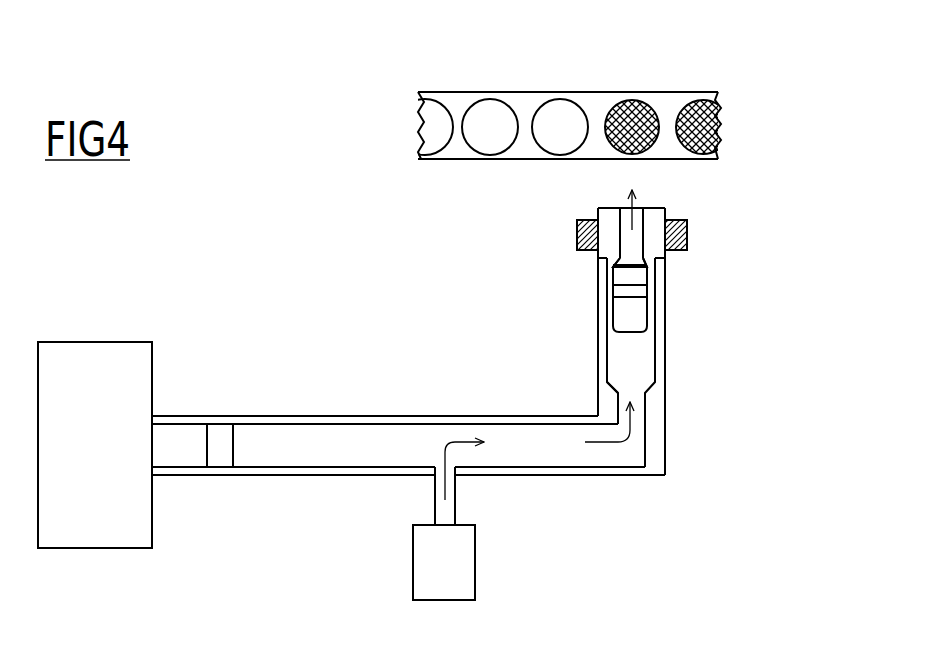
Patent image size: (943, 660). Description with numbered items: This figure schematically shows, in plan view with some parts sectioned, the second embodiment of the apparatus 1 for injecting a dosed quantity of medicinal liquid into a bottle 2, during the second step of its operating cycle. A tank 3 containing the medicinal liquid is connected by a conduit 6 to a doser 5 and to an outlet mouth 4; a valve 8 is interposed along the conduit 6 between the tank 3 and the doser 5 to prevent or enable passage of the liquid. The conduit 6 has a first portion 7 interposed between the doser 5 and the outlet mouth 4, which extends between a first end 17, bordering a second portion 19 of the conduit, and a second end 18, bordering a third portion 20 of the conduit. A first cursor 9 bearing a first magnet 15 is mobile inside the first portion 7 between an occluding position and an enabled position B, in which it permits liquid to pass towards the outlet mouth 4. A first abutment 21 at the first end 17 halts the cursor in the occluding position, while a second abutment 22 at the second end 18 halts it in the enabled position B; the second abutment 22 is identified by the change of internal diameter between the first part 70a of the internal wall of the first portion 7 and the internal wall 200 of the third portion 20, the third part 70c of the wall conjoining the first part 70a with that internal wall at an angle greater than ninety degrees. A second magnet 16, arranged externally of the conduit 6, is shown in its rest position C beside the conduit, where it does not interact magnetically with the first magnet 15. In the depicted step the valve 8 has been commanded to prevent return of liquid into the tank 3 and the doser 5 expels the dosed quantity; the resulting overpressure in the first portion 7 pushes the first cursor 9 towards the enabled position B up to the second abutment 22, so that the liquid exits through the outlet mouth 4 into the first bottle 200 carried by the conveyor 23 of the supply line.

The apparatus 1 is at (599, 506).
The bottle 2 is at (432, 130).
The first bottle 200 is at (632, 115).
The tank 3 is at (105, 451).
The outlet mouth 4 is at (587, 202).
The doser 5 is at (458, 573).
The conduit 6 is at (328, 404).
The first portion of conduit 7 is at (589, 333).
The valve 8 is at (228, 462).
The first cursor 9 is at (638, 312).
The first magnet 15 is at (640, 293).
The second magnet 16 is at (577, 220).
The first end of first portion of conduit 17 is at (684, 372).
The second end of first portion of conduit 18 is at (678, 261).
The second portion of conduit 19 is at (684, 418).
The third portion of conduit 20 is at (699, 219).
The first abutment 21 is at (600, 392).
The second abutment 22 is at (603, 261).
The conveyor 23 is at (450, 143).
The first part of internal wall 70a is at (655, 321).
The third part of internal wall 70c is at (657, 262).
The enabled position B is at (562, 270).
The rest position C is at (559, 233).